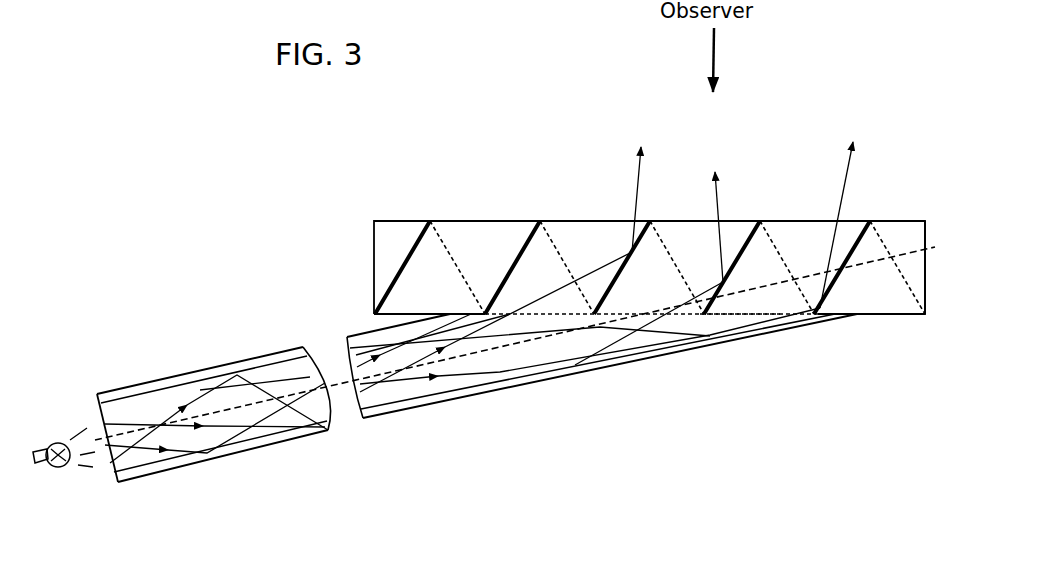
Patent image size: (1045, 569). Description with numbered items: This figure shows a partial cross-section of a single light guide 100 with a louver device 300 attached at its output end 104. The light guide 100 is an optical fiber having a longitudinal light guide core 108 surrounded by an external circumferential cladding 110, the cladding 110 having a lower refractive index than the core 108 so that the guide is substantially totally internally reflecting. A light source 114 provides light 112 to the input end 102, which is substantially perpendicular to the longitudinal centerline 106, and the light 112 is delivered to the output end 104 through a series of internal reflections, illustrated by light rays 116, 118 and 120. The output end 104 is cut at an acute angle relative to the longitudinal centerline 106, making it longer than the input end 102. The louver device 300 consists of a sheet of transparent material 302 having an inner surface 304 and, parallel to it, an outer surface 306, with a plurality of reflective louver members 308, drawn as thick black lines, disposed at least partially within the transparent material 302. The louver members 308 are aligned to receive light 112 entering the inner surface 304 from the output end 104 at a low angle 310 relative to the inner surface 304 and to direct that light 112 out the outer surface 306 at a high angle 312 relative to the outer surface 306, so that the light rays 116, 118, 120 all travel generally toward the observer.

The light guide 100 is at (210, 342).
The input end 102 is at (115, 470).
The output end 104 is at (583, 315).
The longitudinal centerline 106 is at (538, 340).
The light guide core 108 is at (235, 390).
The cladding 110 is at (132, 386).
The light 112 is at (85, 468).
The light source 114 is at (53, 442).
The light ray 116 is at (552, 235).
The light ray 118 is at (848, 212).
The light ray 120 is at (718, 216).
The louver device 300 is at (360, 215).
The transparent material 302 is at (365, 262).
The inner surface 304 is at (858, 314).
The outer surface 306 is at (382, 220).
The reflective louver members 308 is at (521, 250).
The low angle 310 is at (740, 315).
The high angle 312 is at (866, 221).